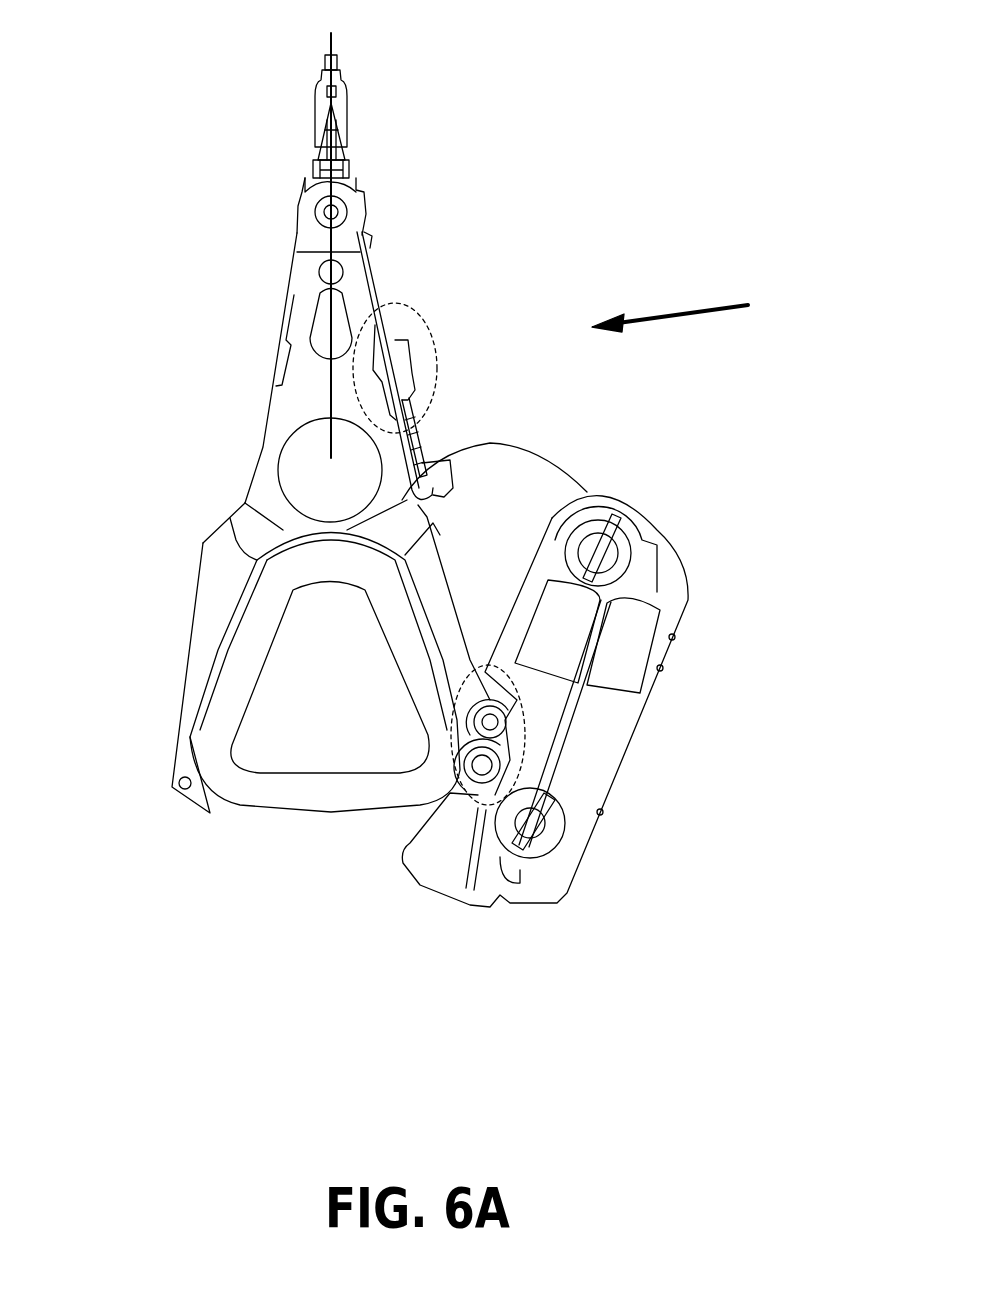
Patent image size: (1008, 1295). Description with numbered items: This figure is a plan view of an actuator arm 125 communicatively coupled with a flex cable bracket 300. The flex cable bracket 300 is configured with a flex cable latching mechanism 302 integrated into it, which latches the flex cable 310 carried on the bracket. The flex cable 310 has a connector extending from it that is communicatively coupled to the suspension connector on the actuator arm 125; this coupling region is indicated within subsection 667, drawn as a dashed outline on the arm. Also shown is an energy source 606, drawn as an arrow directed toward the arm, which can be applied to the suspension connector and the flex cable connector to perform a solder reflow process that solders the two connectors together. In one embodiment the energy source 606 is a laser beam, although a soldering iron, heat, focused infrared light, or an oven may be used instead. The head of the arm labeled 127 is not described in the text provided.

The arm 125 is at (265, 420).
The head 127 is at (320, 185).
The clip 667 is at (440, 345).
The viewing direction arrow 606 is at (698, 309).
The bracket 300 is at (590, 745).
The boss 302 is at (527, 722).
The upper boss 310 is at (685, 562).